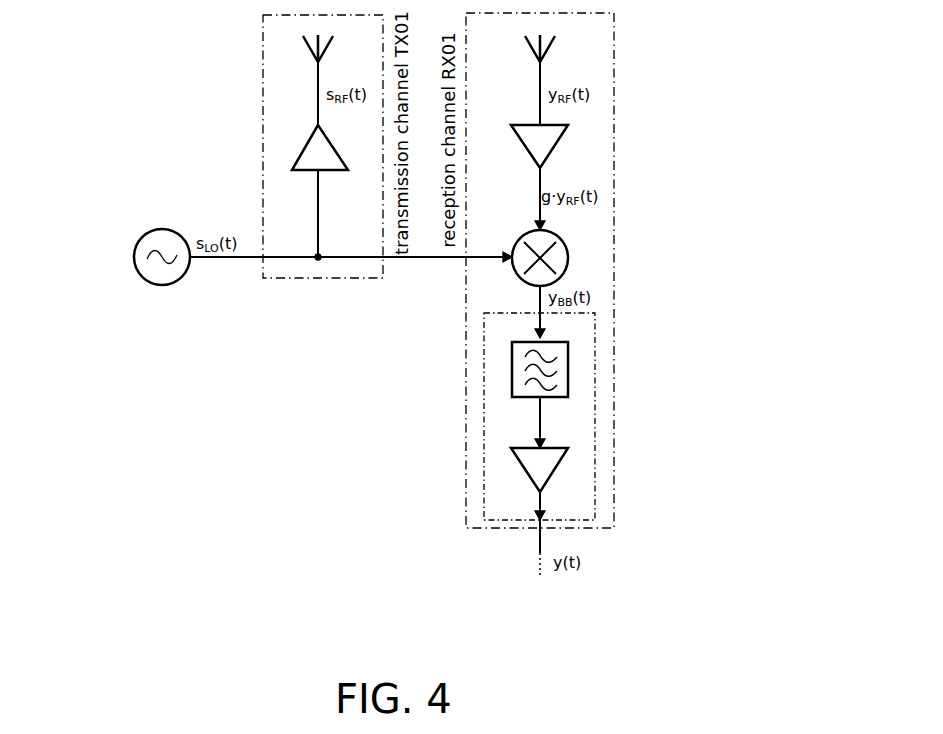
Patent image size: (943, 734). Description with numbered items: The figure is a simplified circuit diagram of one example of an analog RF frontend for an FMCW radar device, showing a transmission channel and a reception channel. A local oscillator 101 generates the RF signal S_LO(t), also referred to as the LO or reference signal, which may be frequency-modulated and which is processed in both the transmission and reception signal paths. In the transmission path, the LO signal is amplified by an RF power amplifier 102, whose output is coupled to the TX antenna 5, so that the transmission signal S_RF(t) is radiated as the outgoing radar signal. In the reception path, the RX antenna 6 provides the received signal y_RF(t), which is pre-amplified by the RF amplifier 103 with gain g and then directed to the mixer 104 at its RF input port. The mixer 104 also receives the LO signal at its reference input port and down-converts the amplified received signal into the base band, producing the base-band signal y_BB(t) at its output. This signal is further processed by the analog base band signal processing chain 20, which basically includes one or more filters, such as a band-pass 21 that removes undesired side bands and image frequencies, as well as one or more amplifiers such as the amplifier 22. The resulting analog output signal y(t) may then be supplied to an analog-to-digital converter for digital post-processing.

The TX antenna 5 is at (312, 60).
The RF power amplifier 102 is at (303, 150).
The local oscillator 101 is at (163, 287).
The RX antenna 6 is at (548, 43).
The RF amplifier 103 is at (562, 142).
The mixer 104 is at (568, 258).
The analog base band signal processing chain 20 is at (595, 393).
The band-pass 21 is at (512, 373).
The amplifier 22 is at (523, 470).